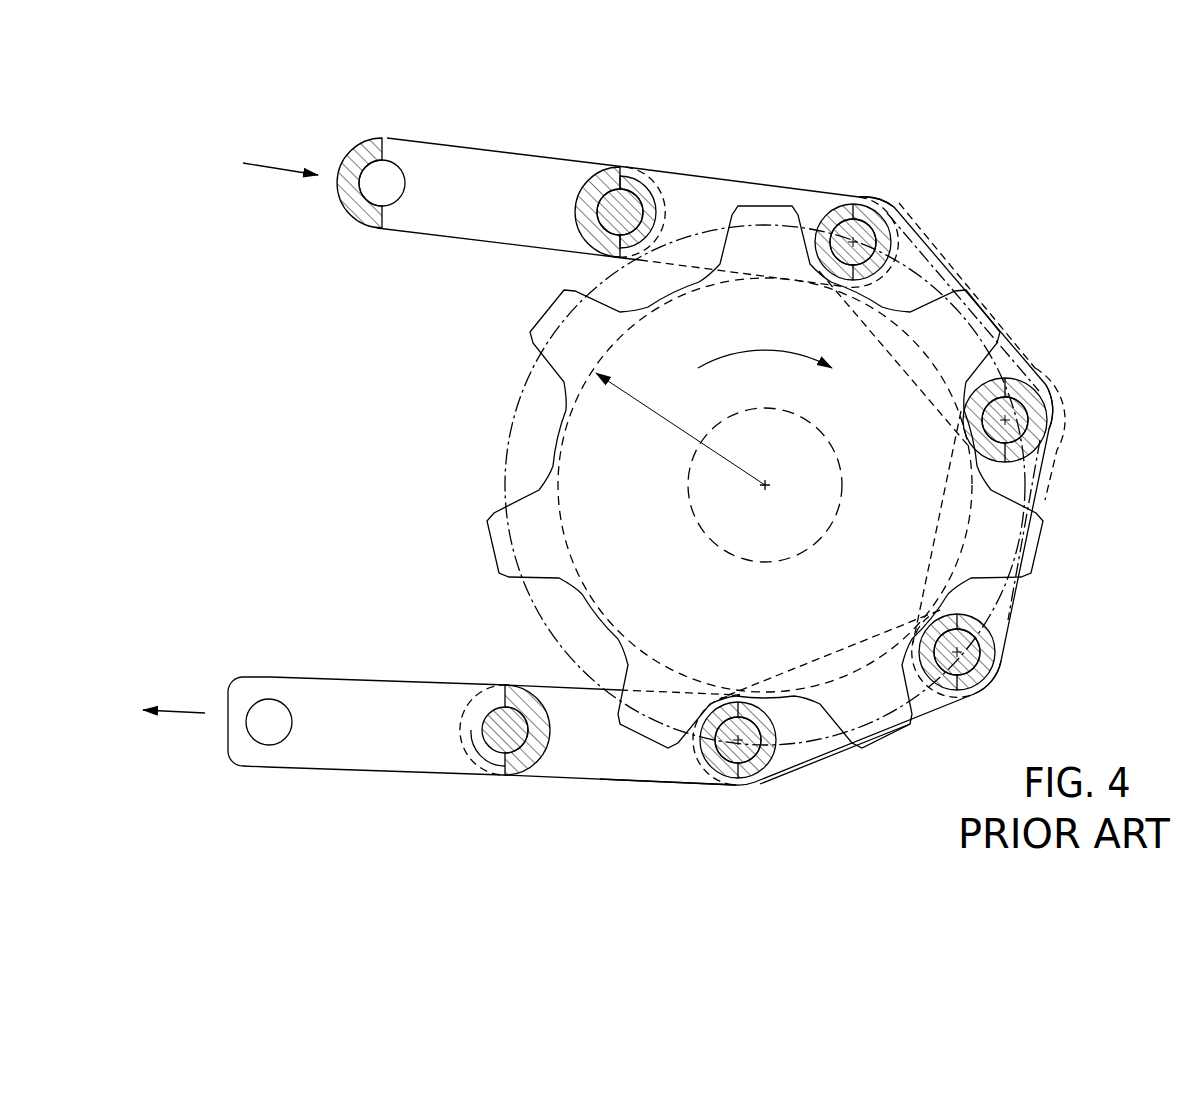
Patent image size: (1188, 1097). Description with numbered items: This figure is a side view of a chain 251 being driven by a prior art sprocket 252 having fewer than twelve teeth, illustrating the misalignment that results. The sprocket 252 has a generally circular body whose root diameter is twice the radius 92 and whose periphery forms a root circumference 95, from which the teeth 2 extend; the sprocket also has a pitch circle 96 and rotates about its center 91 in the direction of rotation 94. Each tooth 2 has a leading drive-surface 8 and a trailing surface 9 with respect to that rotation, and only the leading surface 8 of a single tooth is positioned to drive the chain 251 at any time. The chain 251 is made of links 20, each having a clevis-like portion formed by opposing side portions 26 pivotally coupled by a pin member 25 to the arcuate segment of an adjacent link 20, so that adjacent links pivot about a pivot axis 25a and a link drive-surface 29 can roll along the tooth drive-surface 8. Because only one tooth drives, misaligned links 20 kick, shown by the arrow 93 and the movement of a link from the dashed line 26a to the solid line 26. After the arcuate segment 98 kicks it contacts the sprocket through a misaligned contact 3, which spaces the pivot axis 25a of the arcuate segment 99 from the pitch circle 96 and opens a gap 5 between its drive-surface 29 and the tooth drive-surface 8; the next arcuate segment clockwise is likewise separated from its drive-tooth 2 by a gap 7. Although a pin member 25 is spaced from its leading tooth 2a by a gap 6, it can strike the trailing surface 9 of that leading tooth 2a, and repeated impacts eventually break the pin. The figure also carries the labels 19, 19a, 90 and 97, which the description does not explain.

The drive-tooth 2 is at (895, 745).
The leading tooth 2a is at (637, 740).
The misaligned contact 3 is at (992, 365).
The gap 5 is at (980, 594).
The gap 6 is at (688, 792).
The gap 7 is at (810, 772).
The leading drive-surface 8 is at (496, 500).
The trailing surface 9 is at (510, 590).
The chain travel direction 19 is at (283, 165).
The chain exit direction 19a is at (170, 713).
The link 20 is at (625, 452).
The pin member 25 is at (882, 240).
The pivot axis 25a is at (853, 240).
The side portion 26 is at (495, 148).
The dashed line 26a is at (1030, 318).
The drive-surface 29 is at (585, 176).
The sprocket 90 is at (528, 451).
The center 91 is at (772, 480).
The radius 92 is at (592, 371).
The arrow 93 is at (1068, 382).
The direction of rotation 94 is at (762, 345).
The root circumference 95 is at (632, 343).
The pitch circle 96 is at (495, 425).
The link entry position 97 is at (890, 152).
The arcuate segment 98 is at (1065, 392).
The arcuate segment 99 is at (1030, 645).
The chain 251 is at (443, 118).
The prior art sprocket 252 is at (392, 509).